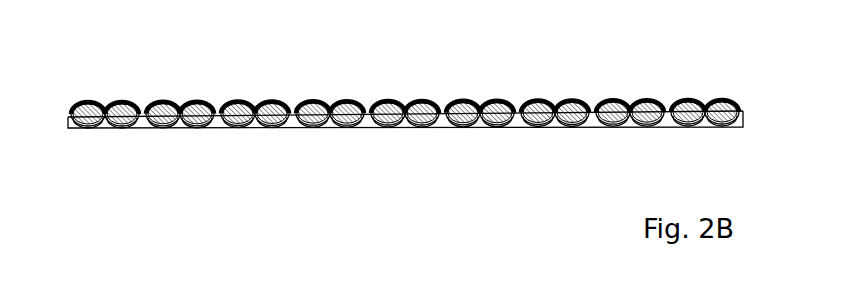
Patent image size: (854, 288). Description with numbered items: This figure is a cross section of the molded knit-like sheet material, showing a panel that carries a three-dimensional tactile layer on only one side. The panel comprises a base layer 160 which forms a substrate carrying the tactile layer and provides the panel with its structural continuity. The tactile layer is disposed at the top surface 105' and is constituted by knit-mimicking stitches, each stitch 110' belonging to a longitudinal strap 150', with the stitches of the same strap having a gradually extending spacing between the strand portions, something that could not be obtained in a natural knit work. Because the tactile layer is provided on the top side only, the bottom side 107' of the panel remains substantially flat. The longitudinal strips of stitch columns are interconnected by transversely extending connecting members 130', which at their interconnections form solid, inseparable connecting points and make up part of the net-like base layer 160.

The top surface 105' is at (420, 113).
The bottom side 107' is at (405, 157).
The stitch 110' is at (419, 83).
The connecting member 130' is at (405, 145).
The longitudinal strap 150' is at (529, 76).
The base layer 160 is at (297, 121).